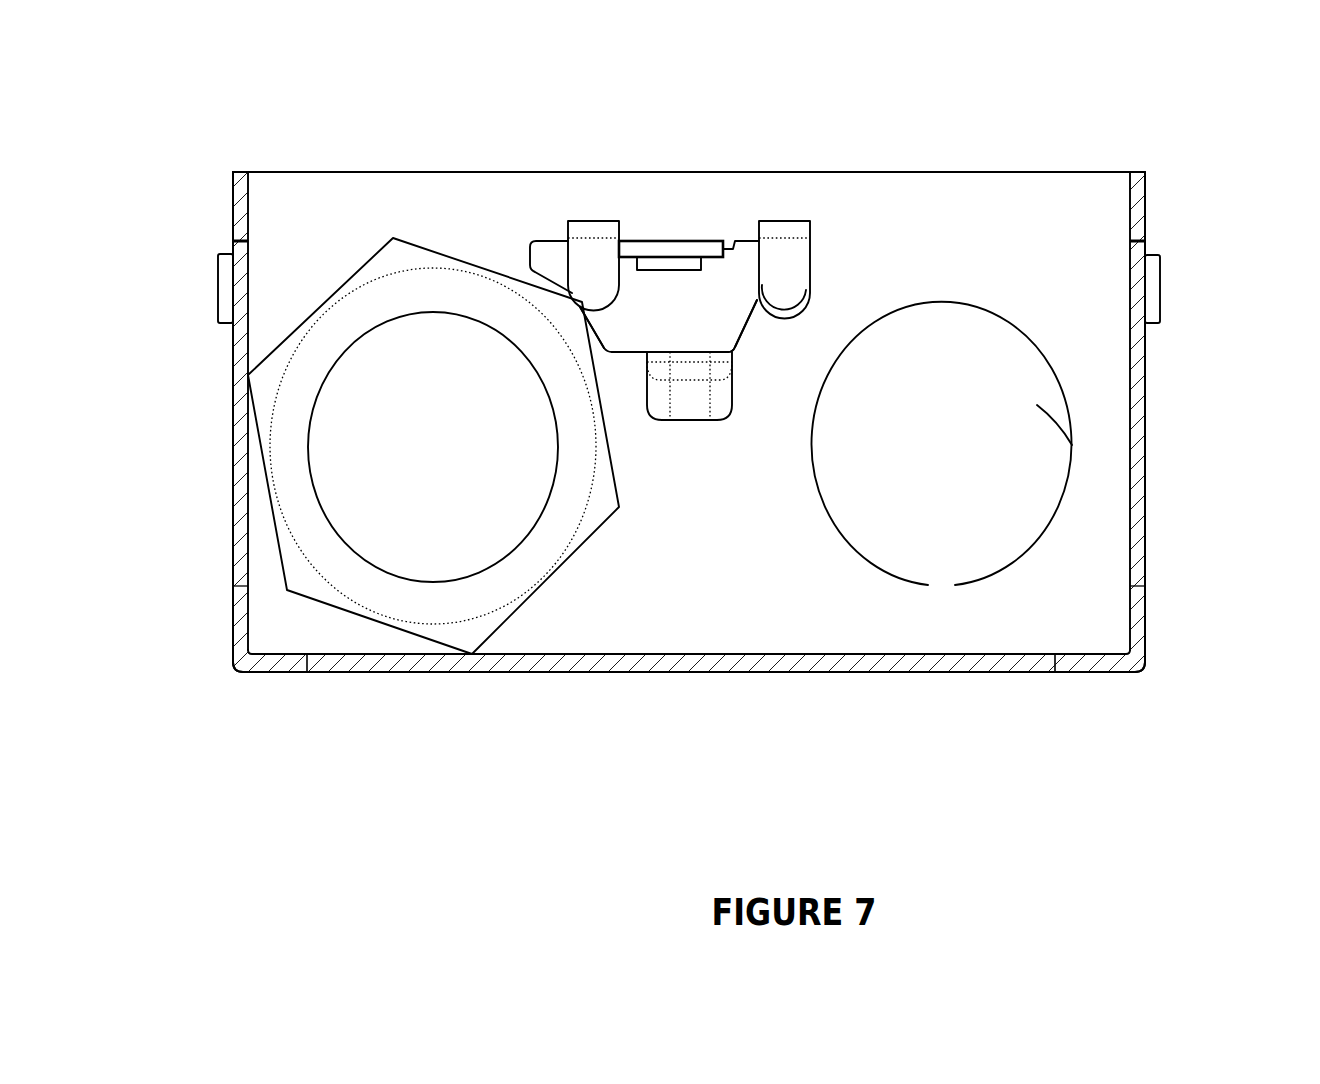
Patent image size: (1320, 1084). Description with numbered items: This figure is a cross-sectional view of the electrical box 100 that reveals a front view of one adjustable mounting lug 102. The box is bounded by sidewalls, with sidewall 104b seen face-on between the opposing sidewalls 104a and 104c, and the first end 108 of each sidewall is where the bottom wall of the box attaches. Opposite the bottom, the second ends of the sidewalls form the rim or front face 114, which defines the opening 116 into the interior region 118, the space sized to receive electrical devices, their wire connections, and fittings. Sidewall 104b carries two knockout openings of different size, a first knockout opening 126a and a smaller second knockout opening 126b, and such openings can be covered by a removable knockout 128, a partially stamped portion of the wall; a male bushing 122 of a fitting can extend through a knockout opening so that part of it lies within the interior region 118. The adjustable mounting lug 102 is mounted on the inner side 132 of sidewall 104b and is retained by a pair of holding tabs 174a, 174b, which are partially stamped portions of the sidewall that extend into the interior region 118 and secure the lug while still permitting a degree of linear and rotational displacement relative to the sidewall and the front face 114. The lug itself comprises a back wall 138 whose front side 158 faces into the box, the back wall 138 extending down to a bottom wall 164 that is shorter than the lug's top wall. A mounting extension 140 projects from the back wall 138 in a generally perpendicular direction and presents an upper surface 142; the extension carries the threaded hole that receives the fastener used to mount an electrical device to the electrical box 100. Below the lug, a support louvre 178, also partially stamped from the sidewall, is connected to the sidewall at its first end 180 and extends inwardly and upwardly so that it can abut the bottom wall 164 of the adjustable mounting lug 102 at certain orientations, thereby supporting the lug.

The electrical box 100 is at (1103, 740).
The adjustable mounting lug 102 is at (745, 253).
The sidewall 104a is at (1147, 443).
The sidewall 104b is at (1065, 188).
The sidewall 104c is at (233, 532).
The first end 108 is at (233, 638).
The front face 114 is at (237, 171).
The opening 116 is at (282, 177).
The interior region 118 is at (670, 627).
The male bushing 122 is at (417, 262).
The first knockout opening 126a is at (397, 464).
The second knockout opening 126b is at (983, 464).
The knockout 128 is at (1038, 416).
The inner side 132 is at (190, 205).
The back wall 138 is at (610, 352).
The mounting extension 140 is at (697, 248).
The upper surface 142 is at (633, 240).
The front side 158 is at (740, 303).
The bottom wall 164 is at (643, 337).
The holding tab 174a is at (583, 255).
The holding tab 174b is at (802, 253).
The support louvre 178 is at (697, 400).
The first end 180 is at (703, 420).